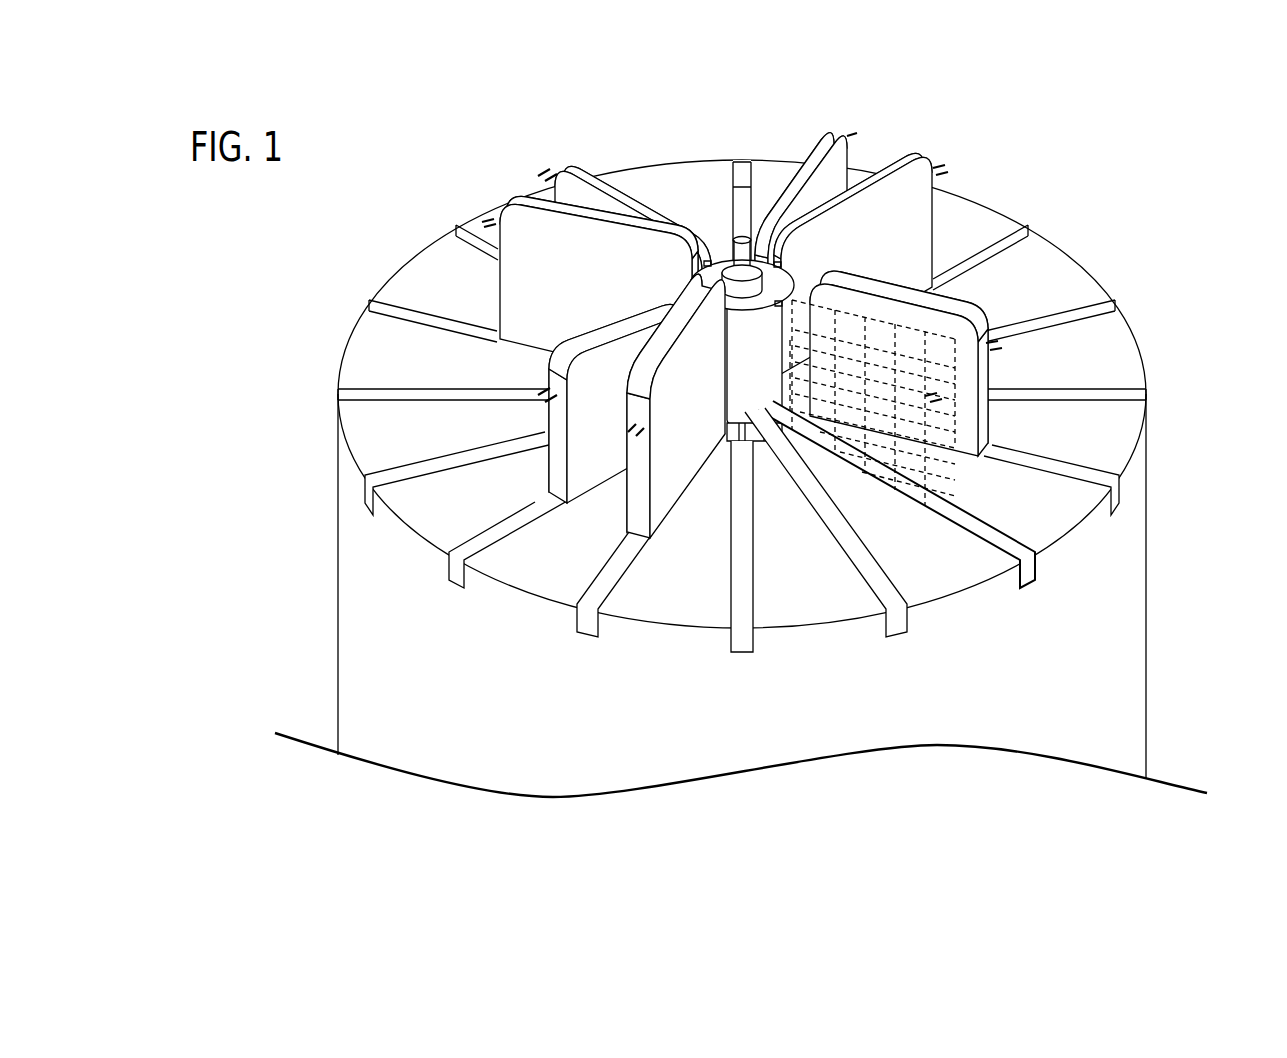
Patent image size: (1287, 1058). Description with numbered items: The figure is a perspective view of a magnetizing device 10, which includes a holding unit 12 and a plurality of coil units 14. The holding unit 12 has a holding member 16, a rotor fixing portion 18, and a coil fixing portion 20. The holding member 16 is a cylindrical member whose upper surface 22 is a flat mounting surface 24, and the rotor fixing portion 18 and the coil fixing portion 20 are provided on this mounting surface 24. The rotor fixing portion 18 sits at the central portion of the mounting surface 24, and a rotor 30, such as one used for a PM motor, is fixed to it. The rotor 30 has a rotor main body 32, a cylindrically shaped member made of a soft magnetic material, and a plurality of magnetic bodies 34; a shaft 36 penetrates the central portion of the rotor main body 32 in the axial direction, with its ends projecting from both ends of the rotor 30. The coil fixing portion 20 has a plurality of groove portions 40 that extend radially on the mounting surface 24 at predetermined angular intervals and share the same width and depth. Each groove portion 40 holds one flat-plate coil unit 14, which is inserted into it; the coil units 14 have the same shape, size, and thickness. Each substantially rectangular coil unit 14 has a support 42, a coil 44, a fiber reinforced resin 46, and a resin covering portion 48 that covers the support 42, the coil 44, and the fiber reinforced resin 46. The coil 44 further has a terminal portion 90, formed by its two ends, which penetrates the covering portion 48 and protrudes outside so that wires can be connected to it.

The magnetizing device 10 is at (238, 240).
The holding unit 12 is at (1067, 250).
The coil unit 14 is at (742, 373).
The holding member 16 is at (1127, 560).
The rotor fixing portion 18 is at (768, 418).
The coil fixing portion 20 is at (1110, 367).
The upper surface 22 is at (980, 257).
The mounting surface 24 is at (793, 340).
The rotor 30 is at (766, 363).
The rotor main body 32 is at (690, 283).
The magnetic body 34 is at (712, 303).
The shaft 36 is at (742, 236).
The groove portion 40 is at (622, 560).
The support 42 is at (812, 334).
The coil 44 is at (908, 343).
The fiber reinforced resin 46 is at (891, 472).
The covering portion 48 is at (588, 203).
The terminal portion 90 is at (1005, 353).